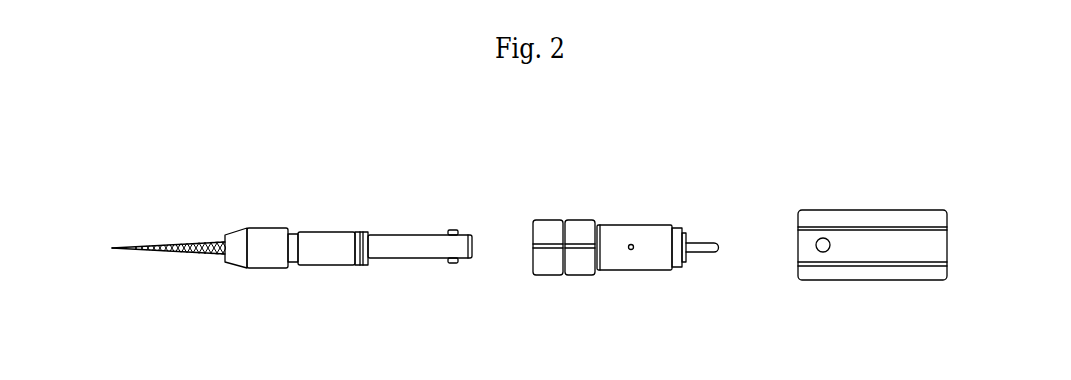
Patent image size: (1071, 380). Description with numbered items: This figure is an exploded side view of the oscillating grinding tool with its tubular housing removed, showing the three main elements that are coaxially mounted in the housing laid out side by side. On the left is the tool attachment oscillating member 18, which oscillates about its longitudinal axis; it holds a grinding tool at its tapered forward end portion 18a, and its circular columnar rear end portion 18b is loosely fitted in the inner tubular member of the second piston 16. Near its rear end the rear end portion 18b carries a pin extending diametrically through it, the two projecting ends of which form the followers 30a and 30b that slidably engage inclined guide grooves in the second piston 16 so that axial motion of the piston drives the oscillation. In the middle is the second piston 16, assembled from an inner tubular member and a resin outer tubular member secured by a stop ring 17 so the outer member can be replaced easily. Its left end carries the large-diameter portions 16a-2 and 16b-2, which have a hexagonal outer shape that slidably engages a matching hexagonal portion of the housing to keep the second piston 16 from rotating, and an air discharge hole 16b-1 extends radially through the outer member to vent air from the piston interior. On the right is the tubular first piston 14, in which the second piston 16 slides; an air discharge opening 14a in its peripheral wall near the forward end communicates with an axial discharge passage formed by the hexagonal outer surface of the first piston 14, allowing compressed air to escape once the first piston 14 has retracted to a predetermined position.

The first piston 14 is at (869, 177).
The air discharge opening 14a is at (823, 248).
The second piston 16 is at (645, 175).
The large-diameter portion of inner tubular member 16a-2 is at (535, 219).
The large-diameter portion of outer tubular member 16b-2 is at (587, 219).
The air discharge hole 16b-1 is at (631, 250).
The stop ring 17 is at (673, 223).
The tool attachment oscillating member 18 is at (358, 186).
The forward end portion 18a is at (263, 261).
The rear end portion 18b is at (400, 252).
The follower 30a is at (455, 264).
The follower 30b is at (454, 230).